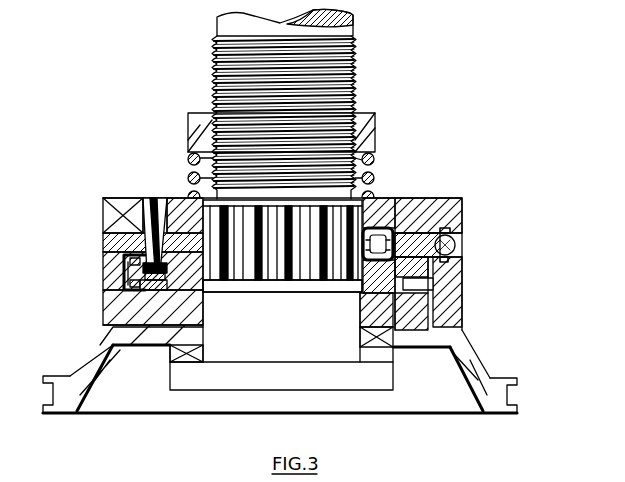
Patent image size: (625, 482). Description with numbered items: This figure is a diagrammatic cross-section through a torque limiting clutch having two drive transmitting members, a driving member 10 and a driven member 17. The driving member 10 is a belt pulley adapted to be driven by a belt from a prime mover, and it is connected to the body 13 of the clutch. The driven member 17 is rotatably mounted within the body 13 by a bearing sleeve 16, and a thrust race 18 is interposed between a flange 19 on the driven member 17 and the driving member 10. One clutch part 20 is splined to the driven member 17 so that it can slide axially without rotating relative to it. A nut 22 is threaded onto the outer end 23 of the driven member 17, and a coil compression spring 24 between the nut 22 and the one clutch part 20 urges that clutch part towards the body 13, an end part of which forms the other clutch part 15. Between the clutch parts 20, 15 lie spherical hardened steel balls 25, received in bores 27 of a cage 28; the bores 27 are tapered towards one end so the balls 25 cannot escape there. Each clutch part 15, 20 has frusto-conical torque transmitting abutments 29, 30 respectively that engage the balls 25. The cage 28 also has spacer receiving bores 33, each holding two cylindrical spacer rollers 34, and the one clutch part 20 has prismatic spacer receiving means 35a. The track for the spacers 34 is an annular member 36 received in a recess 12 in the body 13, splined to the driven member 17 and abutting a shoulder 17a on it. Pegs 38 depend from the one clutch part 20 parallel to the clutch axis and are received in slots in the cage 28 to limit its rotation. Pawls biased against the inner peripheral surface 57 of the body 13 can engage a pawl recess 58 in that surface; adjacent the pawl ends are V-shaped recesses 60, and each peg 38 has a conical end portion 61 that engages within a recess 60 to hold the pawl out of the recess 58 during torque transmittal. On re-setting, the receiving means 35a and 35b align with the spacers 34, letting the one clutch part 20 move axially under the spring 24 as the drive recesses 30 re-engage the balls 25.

The driving member 10 is at (64, 381).
The recess 12 is at (143, 288).
The body 13 is at (113, 307).
The other clutch part 15 is at (463, 268).
The bearing sleeve 16 is at (209, 363).
The driven member 17 is at (282, 281).
The shoulder 17a is at (207, 291).
The thrust race 18 is at (390, 358).
The flange 19 is at (365, 386).
The one clutch part 20 is at (463, 200).
The nut 22 is at (377, 124).
The outer end 23 is at (357, 61).
The coil compression spring 24 is at (373, 177).
The balls 25 is at (456, 241).
The bores 27 is at (452, 257).
The cage 28 is at (111, 238).
The torque transmitting abutments 29 is at (463, 262).
The torque transmitting abutments 30 is at (450, 231).
The spacer receiving bores 33 is at (422, 276).
The spacer rollers 34 is at (394, 228).
The spacer receiving means 35a is at (389, 228).
The spacer receiving means 35b is at (380, 297).
The annular member 36 is at (427, 299).
The pegs 38 is at (150, 203).
The inner peripheral surface 57 is at (123, 262).
The pawl recess 58 is at (125, 283).
The recesses 60 is at (143, 240).
The conical end portion 61 is at (153, 272).